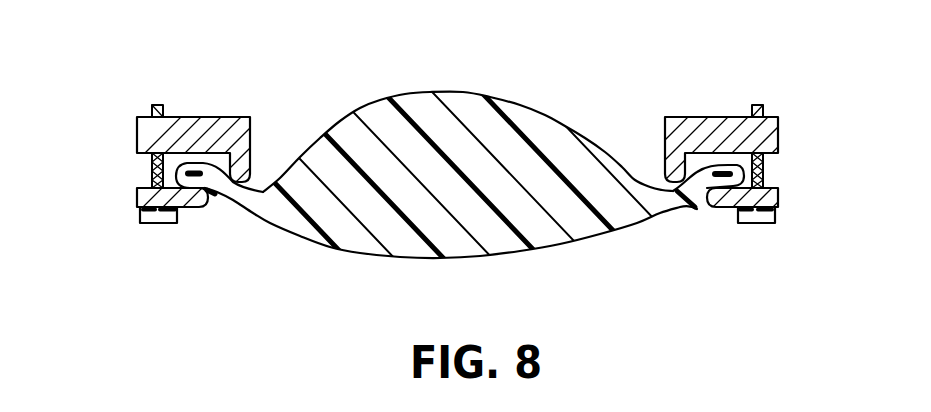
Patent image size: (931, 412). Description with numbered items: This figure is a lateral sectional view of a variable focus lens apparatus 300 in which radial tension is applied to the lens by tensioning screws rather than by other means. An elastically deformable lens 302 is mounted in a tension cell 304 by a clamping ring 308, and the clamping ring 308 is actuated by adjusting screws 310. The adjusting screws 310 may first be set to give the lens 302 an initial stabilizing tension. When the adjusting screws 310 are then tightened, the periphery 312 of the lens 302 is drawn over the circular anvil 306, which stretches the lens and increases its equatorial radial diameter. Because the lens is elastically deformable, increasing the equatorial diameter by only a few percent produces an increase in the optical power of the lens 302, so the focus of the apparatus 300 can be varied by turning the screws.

The apparatus 300 is at (598, 97).
The elastically deformable lens 302 is at (453, 130).
The tension cell 304 is at (207, 117).
The circular anvil 306 is at (268, 182).
The clamping ring 308 is at (138, 193).
The adjusting screws 310 is at (157, 223).
The periphery 312 is at (765, 173).